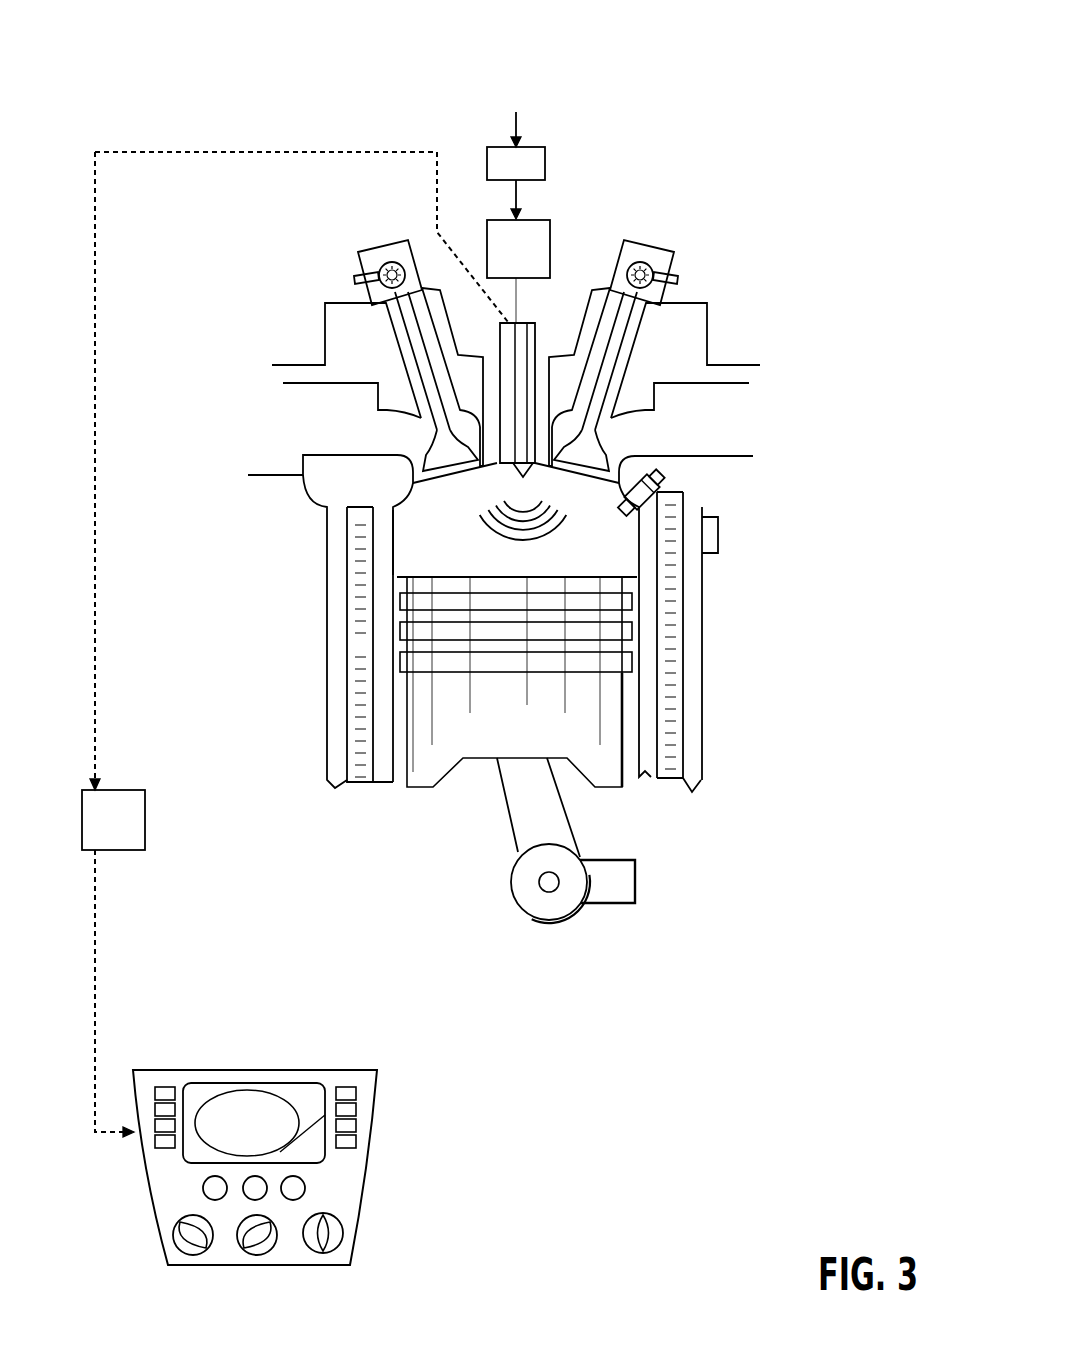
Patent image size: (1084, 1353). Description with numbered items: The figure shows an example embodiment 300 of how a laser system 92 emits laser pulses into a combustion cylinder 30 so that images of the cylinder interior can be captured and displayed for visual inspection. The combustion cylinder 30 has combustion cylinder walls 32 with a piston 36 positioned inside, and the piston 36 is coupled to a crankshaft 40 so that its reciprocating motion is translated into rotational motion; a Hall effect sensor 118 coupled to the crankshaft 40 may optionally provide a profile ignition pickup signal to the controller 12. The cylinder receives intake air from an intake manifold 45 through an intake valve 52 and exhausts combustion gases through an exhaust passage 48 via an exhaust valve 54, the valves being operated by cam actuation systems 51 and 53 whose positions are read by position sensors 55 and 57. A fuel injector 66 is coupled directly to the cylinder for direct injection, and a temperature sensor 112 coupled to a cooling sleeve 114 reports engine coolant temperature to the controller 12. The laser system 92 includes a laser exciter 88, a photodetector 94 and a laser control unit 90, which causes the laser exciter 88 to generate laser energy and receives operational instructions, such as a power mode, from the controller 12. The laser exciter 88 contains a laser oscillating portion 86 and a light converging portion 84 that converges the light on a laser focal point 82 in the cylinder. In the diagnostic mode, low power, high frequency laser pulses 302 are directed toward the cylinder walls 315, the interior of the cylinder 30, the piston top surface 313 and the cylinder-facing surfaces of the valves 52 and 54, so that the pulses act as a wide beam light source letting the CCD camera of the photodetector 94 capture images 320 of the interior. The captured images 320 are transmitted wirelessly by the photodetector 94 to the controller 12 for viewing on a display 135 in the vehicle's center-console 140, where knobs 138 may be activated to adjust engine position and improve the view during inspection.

The example embodiment 300 is at (254, 57).
The controller 12 is at (127, 832).
The laser system 92 is at (454, 127).
The laser control unit 90 is at (516, 163).
The laser oscillating portion 86 is at (518, 249).
The photodetector 94 is at (499, 357).
The laser exciter 88 is at (525, 325).
The light converging portion 84 is at (523, 437).
The laser focal point 82 is at (520, 470).
The laser pulses 302 is at (553, 527).
The cam actuation system 53 is at (408, 240).
The position sensor 57 is at (355, 278).
The exhaust valve 54 is at (440, 447).
The exhaust passage 48 is at (377, 377).
The cam actuation system 51 is at (627, 240).
The position sensor 55 is at (678, 278).
The intake valve 52 is at (598, 448).
The intake manifold 45 is at (705, 510).
The combustion cylinder 30 is at (427, 500).
The combustion cylinder walls 32 is at (385, 783).
The cylinder walls 315 is at (397, 558).
The cooling sleeve 114 is at (663, 708).
The temperature sensor 112 is at (720, 553).
The fuel injector 66 is at (634, 479).
The piston 36 is at (450, 740).
The piston top surface 313 is at (507, 575).
The crankshaft 40 is at (530, 915).
The Hall effect sensor 118 is at (607, 903).
The center-console 140 is at (397, 1058).
The display 135 is at (265, 1083).
The images 320 is at (225, 1122).
The knobs 138 is at (303, 1192).